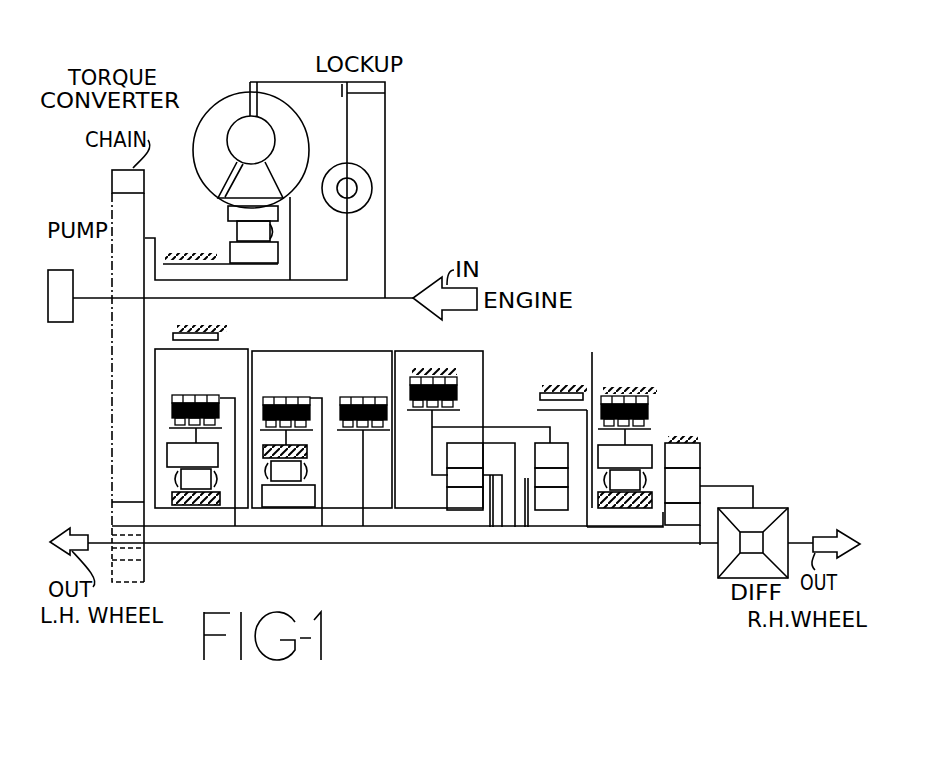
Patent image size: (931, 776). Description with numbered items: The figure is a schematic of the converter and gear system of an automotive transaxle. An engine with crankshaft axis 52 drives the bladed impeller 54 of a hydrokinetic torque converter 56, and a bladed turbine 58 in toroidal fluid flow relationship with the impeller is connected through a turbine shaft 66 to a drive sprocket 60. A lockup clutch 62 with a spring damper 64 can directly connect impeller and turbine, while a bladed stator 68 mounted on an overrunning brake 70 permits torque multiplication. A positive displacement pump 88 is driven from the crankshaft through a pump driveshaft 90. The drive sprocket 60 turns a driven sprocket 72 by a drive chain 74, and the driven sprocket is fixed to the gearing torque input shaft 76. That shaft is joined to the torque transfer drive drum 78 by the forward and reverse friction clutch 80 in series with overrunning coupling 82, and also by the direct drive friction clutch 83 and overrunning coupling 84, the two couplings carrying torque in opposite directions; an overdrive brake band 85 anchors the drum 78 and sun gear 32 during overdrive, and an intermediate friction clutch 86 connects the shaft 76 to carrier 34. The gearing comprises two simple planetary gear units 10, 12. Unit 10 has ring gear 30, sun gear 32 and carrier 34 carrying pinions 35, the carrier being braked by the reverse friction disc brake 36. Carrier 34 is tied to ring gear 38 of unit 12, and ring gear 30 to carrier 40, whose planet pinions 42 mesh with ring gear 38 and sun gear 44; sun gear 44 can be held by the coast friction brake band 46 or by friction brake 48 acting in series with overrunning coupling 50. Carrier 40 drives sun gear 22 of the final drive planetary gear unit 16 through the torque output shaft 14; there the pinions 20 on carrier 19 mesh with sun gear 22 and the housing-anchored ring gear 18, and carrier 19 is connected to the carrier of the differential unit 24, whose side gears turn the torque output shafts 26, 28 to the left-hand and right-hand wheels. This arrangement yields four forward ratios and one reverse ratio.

The simple planetary gear unit 10 is at (505, 443).
The simple planetary gear unit 12 is at (564, 438).
The torque output shaft 14 is at (641, 545).
The final drive simple planetary gear unit 16 is at (704, 436).
The ring gear 18 is at (683, 426).
The carrier 19 is at (723, 486).
The pinions 20 is at (687, 482).
The torque input sun gear 22 is at (697, 546).
The differential 24 is at (780, 505).
The torque output shaft 26 is at (803, 543).
The torque output shaft 28 is at (588, 530).
The ring gear 30 is at (474, 440).
The sun gear 32 is at (467, 510).
The carrier 34 is at (491, 528).
The pinions 35 is at (448, 478).
The reverse friction disc brake 36 is at (457, 442).
The ring gear 38 is at (542, 443).
The carrier 40 is at (526, 528).
The planet pinions 42 is at (558, 480).
The sun gear 44 is at (553, 510).
The coast friction brake band 46 is at (523, 385).
The friction brake 48 is at (655, 392).
The overrunning coupling 50 is at (648, 482).
The crankshaft axis 52 is at (410, 296).
The bladed impeller 54 is at (232, 107).
The hydrokinetic torque converter 56 is at (211, 97).
The bladed turbine 58 is at (278, 115).
The drive sprocket 60 is at (128, 180).
The lockup clutch 62 is at (382, 93).
The spring damper 64 is at (358, 190).
The turbine shaft 66 is at (260, 281).
The bladed stator 68 is at (247, 192).
The overrunning brake 70 is at (245, 230).
The driven sprocket 72 is at (110, 455).
The drive chain 74 is at (110, 392).
The gearing torque input shaft 76 is at (287, 527).
The torque transfer drive drum 78 is at (316, 351).
The forward and reverse friction clutch 80 is at (227, 528).
The overrunning coupling 82 is at (188, 506).
The direct drive friction clutch 83 is at (310, 412).
The overrunning coupling 84 is at (307, 478).
The overdrive brake band 85 is at (226, 327).
The intermediate friction clutch 86 is at (395, 363).
The positive displacement pump 88 is at (55, 270).
The pump driveshaft 90 is at (95, 300).